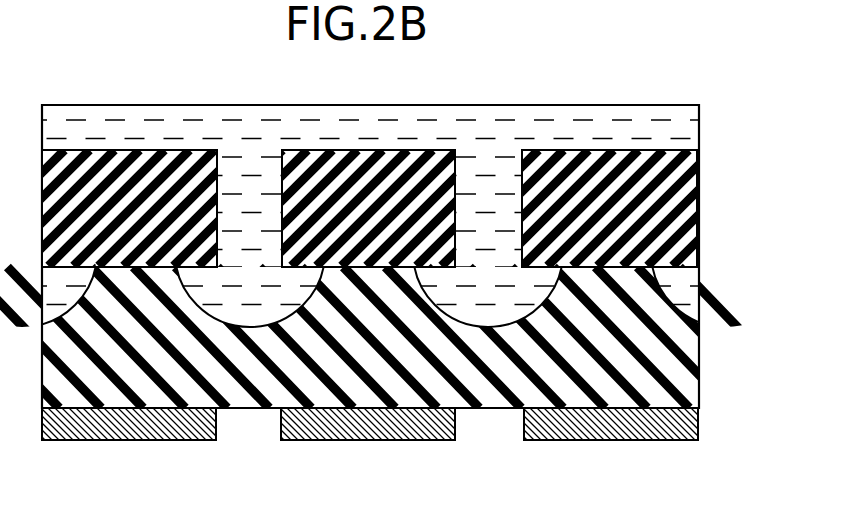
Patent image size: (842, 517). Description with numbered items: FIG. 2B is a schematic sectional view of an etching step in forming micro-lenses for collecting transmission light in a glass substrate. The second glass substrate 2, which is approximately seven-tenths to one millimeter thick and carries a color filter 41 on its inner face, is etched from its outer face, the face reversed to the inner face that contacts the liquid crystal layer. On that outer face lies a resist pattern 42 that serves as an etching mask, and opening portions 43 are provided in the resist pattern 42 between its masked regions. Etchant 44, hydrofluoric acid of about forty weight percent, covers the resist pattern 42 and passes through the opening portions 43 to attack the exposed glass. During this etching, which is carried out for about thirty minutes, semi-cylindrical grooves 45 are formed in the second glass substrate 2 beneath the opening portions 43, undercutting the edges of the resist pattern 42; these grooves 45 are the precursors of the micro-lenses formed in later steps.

The second glass substrate 2 is at (699, 352).
The color filter 41 is at (195, 440).
The resist pattern 42 is at (108, 150).
The opening portion 43 is at (253, 206).
The etchant 44 is at (700, 117).
The semi-cylindrical groove 45 is at (244, 318).